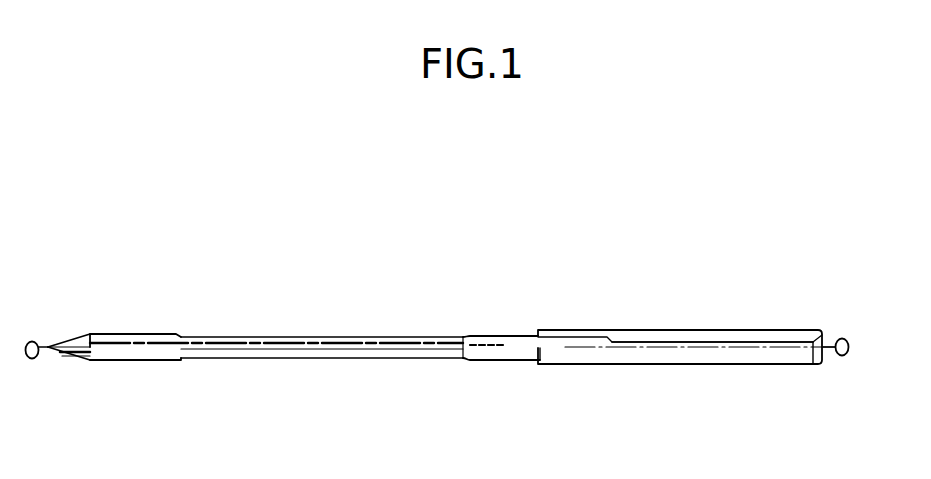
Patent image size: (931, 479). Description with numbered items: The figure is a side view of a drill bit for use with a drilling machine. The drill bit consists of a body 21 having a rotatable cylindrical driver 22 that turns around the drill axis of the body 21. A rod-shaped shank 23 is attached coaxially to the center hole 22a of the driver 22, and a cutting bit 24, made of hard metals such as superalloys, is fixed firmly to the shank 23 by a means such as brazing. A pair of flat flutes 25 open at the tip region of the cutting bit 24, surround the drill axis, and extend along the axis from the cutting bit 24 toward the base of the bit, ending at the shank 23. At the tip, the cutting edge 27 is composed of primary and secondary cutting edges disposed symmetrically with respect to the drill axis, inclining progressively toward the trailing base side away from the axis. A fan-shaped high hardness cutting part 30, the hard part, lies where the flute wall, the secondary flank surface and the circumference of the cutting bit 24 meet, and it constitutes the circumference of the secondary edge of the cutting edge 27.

The body 21 is at (686, 334).
The driver 22 is at (672, 358).
The center hole 22a is at (742, 345).
The shank 23 is at (480, 337).
The cutting bit 24 is at (152, 337).
The flute 25 is at (170, 360).
The cutting edge 27 is at (56, 342).
The high hardness cutting part 30 is at (84, 358).